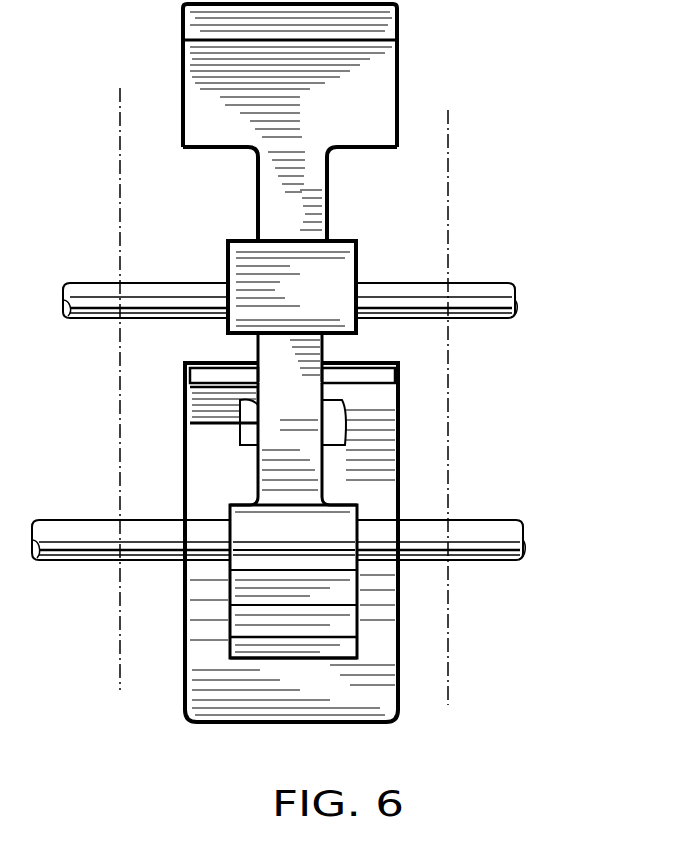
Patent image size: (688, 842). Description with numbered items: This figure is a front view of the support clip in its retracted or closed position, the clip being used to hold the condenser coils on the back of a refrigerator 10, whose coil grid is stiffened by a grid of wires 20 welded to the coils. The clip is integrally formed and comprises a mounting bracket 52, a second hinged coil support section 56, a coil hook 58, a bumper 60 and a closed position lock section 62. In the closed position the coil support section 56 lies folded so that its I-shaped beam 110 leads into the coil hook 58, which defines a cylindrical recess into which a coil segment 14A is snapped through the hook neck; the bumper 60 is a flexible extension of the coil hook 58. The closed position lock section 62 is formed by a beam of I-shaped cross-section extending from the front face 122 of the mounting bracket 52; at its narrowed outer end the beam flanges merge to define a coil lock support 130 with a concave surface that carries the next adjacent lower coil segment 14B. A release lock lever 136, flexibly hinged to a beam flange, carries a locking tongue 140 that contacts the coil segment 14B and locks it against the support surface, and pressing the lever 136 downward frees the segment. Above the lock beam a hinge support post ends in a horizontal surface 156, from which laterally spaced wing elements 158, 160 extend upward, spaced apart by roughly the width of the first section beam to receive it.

The refrigerator 10 is at (397, 28).
The grid of wires 20 is at (120, 136).
The I-shaped beam 110 is at (327, 183).
The second hinged coil support section 56 is at (230, 180).
The coil hook 58 is at (356, 268).
The coil segment 14A is at (505, 285).
The bumper 60 is at (355, 358).
The mounting bracket 52 is at (168, 706).
The wing element 158 is at (190, 387).
The front face 122 is at (195, 438).
The horizontal surface 156 is at (244, 412).
The wing element 160 is at (380, 396).
The closed position lock section 62 is at (362, 492).
The locking tongue 140 is at (350, 555).
The coil segment 14B is at (512, 525).
The coil lock support 130 is at (375, 634).
The release lock lever 136 is at (352, 660).